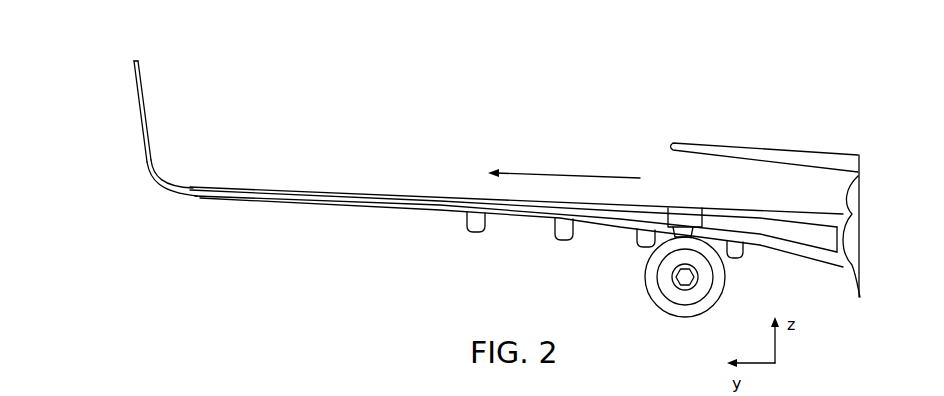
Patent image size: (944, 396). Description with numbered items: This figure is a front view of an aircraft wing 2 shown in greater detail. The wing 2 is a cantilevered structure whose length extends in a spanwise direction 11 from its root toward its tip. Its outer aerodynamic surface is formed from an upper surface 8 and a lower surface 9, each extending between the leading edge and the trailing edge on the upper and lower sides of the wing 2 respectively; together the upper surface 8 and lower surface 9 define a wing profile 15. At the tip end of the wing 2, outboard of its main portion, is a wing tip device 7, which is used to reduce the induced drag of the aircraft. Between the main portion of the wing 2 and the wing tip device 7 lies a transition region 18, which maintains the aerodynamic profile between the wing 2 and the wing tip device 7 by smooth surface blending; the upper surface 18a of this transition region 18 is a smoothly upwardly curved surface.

The wing tip device 7 is at (105, 89).
The transition region 18 is at (181, 144).
The upper surface of the transition region 18a is at (192, 188).
The wing profile 15 is at (298, 190).
The wing 2 is at (270, 188).
The upper surface 8 is at (404, 195).
The lower surface 9 is at (413, 210).
The spanwise direction 11 is at (564, 160).